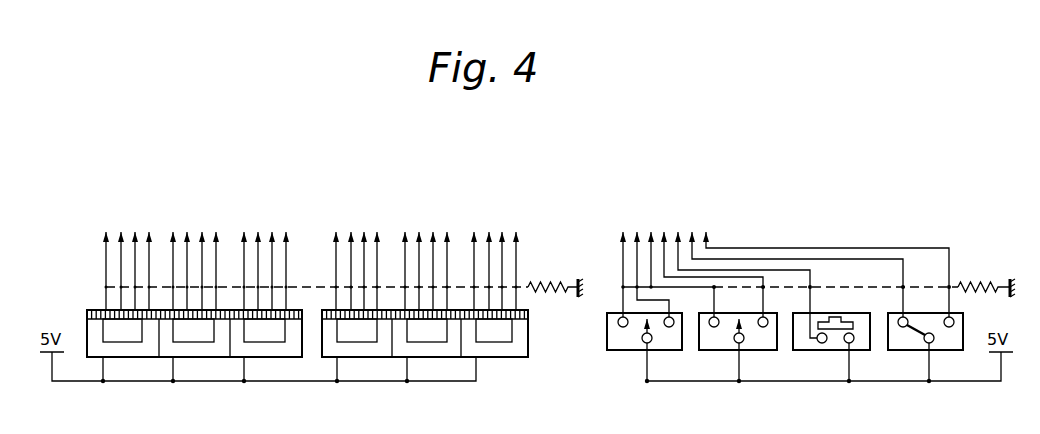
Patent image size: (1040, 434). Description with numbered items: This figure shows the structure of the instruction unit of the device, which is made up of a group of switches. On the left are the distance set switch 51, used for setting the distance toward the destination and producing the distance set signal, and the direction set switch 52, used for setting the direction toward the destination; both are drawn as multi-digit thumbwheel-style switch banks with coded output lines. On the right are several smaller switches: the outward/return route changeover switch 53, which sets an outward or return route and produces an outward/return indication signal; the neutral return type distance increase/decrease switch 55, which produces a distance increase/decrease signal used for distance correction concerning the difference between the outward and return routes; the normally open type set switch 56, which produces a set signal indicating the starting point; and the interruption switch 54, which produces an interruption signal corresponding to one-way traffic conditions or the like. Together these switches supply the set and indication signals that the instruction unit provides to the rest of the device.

The distance set switch 51 is at (87, 326).
The direction set switch 52 is at (530, 337).
The outward/return route changeover switch 53 is at (614, 352).
The interruption switch 54 is at (955, 352).
The neutral return type distance increase/decrease switch 55 is at (702, 352).
The normally open type set switch 56 is at (796, 352).